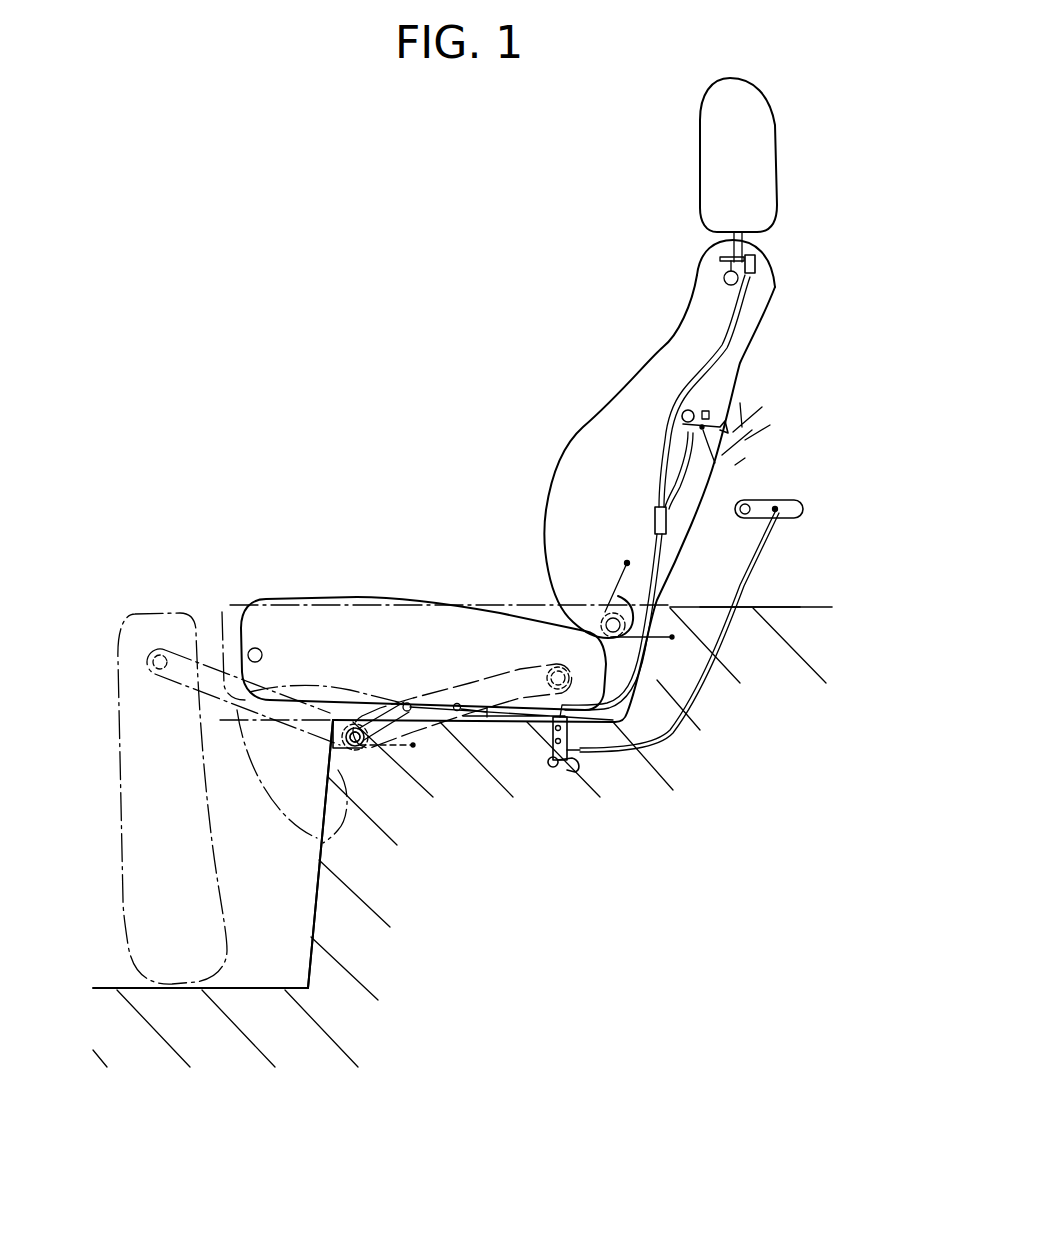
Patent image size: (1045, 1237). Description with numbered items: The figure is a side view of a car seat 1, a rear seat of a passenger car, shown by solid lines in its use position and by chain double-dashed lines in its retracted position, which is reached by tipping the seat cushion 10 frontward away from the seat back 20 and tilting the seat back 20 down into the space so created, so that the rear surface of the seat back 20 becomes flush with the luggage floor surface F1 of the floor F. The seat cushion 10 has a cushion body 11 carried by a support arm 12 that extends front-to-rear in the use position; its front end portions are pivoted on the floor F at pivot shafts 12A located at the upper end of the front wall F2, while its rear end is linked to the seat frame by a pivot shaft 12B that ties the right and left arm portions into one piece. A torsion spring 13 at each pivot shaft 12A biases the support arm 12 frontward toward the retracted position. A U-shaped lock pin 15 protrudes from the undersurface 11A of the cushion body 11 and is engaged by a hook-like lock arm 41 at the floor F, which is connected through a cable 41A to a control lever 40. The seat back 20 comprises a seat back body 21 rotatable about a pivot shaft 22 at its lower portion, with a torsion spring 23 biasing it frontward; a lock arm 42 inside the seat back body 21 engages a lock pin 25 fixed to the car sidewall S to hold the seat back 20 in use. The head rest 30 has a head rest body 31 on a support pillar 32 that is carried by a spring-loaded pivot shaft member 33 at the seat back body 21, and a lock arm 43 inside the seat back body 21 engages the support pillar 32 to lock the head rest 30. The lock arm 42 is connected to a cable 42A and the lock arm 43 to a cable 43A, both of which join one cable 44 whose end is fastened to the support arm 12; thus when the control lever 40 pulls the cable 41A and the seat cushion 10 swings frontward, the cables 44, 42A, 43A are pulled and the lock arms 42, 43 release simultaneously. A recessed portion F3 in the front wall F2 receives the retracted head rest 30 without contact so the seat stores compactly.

The car seat 1 is at (392, 242).
The seat cushion 10 is at (427, 700).
The cushion body 11 is at (353, 598).
The undersurface 11A is at (437, 708).
The support arm 12 is at (493, 677).
The pivot shaft 12A is at (368, 765).
The pivot shaft 12B is at (553, 670).
The torsion spring 13 is at (372, 768).
The lock pin 15 is at (550, 747).
The seat back 20 is at (581, 481).
The seat back body 21 is at (597, 446).
The pivot shaft 22 is at (632, 613).
The torsion spring 23 is at (612, 578).
The lock pin 25 is at (707, 412).
The head rest 30 is at (703, 176).
The head rest body 31 is at (752, 113).
The support pillar 32 is at (730, 232).
The pivot shaft member 33 is at (720, 277).
The control lever 40 is at (790, 507).
The lock arm 41 is at (562, 767).
The cable 41A is at (727, 633).
The lock arm 42 is at (706, 430).
The cable 42A is at (673, 482).
The lock arm 43 is at (752, 258).
The cable 43A is at (760, 313).
The cable 44 is at (662, 540).
The floor F is at (803, 607).
The floor surface F1 is at (778, 607).
The front wall F2 is at (313, 920).
The recessed portion F3 is at (320, 840).
The sidewall S is at (740, 438).